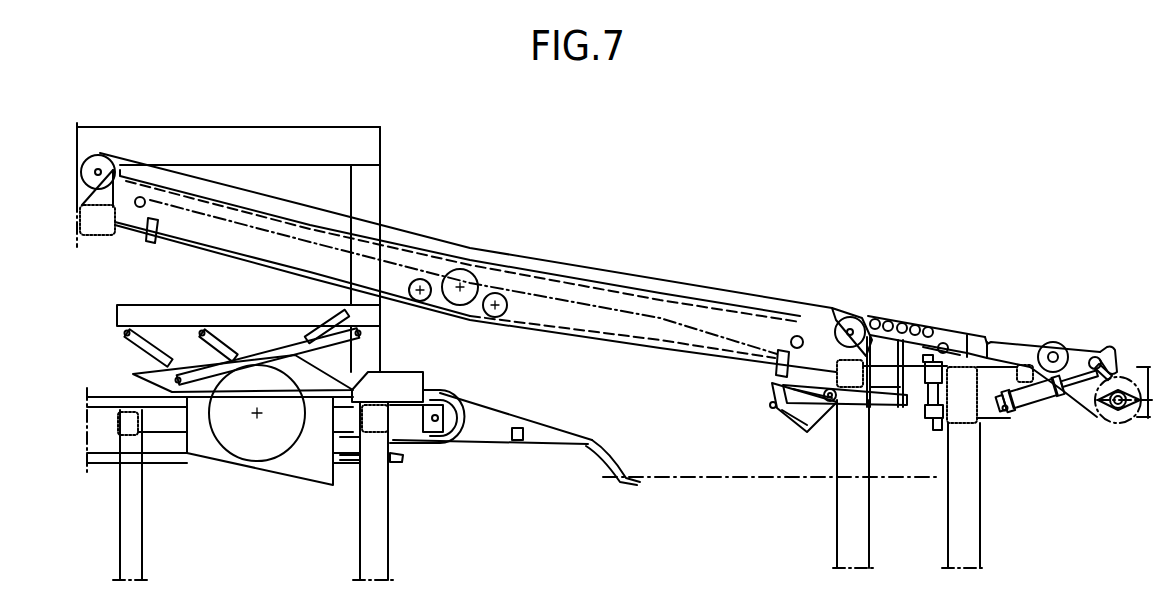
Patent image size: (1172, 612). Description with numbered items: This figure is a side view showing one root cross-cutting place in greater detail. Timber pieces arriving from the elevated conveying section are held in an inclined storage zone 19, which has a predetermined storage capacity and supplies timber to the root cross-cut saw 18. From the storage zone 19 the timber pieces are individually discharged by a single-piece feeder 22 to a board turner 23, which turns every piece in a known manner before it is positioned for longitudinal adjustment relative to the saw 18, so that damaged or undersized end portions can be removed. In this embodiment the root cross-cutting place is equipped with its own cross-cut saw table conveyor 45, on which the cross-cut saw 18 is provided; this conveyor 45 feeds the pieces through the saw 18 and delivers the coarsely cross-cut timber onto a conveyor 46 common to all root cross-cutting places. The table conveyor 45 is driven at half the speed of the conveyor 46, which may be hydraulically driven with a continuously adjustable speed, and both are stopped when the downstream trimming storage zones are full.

The root cross-cut saw 18 is at (270, 461).
The inclined storage zone 19 is at (550, 252).
The single-piece feeder 22 is at (967, 336).
The board turner 23 is at (1083, 350).
The cross-cut saw table conveyor 45 is at (122, 390).
The conveyor 46 is at (687, 482).